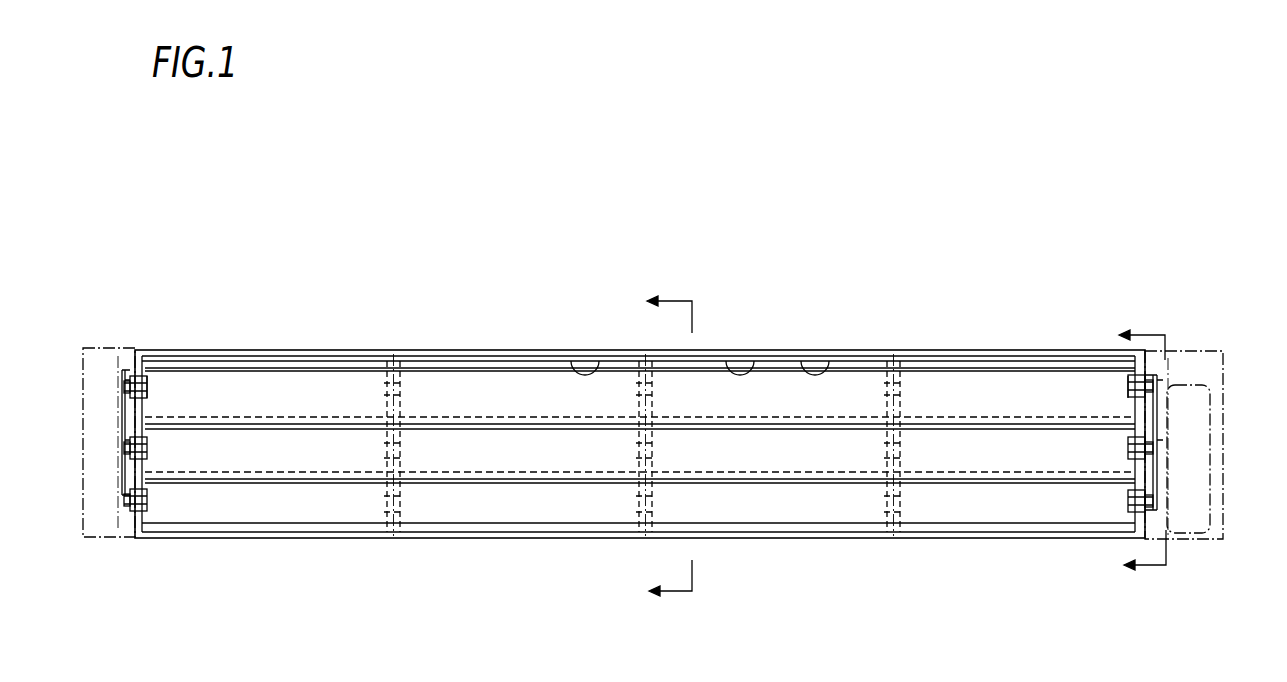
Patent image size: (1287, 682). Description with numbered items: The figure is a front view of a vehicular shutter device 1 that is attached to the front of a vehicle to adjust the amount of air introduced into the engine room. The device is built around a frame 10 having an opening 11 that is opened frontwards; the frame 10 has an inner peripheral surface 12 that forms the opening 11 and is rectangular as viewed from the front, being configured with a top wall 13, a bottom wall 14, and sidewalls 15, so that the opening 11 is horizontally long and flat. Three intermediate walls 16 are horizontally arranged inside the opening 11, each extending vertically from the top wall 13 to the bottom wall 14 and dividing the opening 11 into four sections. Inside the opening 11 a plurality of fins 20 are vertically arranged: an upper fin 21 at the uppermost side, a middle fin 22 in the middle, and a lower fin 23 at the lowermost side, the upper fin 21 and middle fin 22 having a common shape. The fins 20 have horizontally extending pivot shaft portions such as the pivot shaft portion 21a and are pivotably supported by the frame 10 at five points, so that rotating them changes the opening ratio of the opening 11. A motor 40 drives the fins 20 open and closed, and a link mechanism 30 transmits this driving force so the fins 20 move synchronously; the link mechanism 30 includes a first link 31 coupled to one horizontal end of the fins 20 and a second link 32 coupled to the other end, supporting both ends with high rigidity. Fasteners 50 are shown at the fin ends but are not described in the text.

The vehicular shutter device 1 is at (840, 231).
The frame 10 is at (532, 349).
The opening 11 is at (817, 372).
The inner peripheral surface 12 is at (743, 372).
The top wall 13 is at (589, 372).
The bottom wall 14 is at (783, 527).
The sidewalls 15 is at (160, 357).
The intermediate wall 16 is at (400, 521).
The fins 20 is at (640, 452).
The upper fin 21 is at (232, 375).
The pivot shaft portion 21a is at (150, 390).
The middle fin 22 is at (324, 440).
The lower fin 23 is at (262, 510).
The link mechanism 30 is at (675, 459).
The first link 31 is at (117, 482).
The second link 32 is at (1205, 353).
The motor 40 is at (1198, 482).
The bolt 50 is at (131, 386).